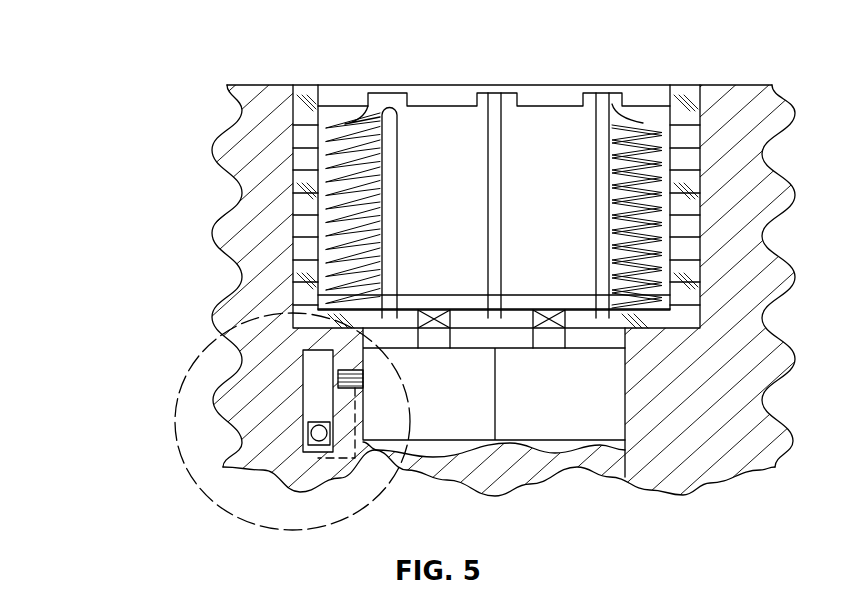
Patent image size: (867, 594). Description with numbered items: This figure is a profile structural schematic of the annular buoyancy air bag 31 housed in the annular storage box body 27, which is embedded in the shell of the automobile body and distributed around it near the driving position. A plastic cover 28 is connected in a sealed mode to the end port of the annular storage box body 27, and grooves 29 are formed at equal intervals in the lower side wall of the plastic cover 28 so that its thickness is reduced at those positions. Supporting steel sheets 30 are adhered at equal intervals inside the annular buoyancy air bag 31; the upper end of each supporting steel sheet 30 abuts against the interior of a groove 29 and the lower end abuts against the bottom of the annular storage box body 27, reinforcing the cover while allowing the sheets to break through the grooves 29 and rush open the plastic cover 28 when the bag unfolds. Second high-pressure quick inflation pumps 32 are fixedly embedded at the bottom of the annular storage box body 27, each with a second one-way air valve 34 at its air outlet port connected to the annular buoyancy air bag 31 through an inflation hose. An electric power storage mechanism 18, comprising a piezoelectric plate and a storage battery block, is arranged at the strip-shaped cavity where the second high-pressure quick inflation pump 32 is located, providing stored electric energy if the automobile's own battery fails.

The electric power storage mechanism 18 is at (172, 437).
The annular storage box body 27 is at (317, 233).
The plastic cover 28 is at (347, 103).
The groove 29 is at (407, 92).
The supporting steel sheet 30 is at (495, 133).
The annular buoyancy air bag 31 is at (645, 167).
The second high-pressure quick inflation pump 32 is at (562, 385).
The second one-way air valve 34 is at (552, 322).